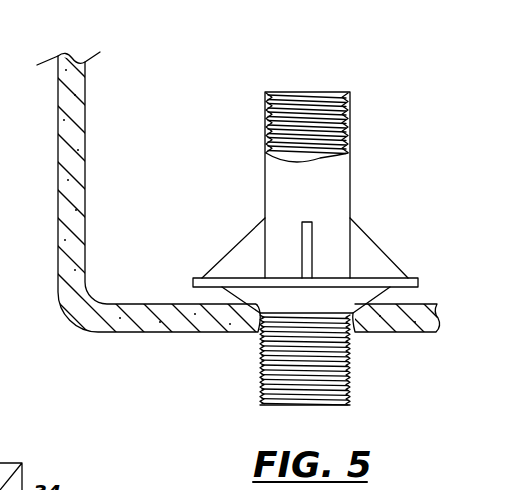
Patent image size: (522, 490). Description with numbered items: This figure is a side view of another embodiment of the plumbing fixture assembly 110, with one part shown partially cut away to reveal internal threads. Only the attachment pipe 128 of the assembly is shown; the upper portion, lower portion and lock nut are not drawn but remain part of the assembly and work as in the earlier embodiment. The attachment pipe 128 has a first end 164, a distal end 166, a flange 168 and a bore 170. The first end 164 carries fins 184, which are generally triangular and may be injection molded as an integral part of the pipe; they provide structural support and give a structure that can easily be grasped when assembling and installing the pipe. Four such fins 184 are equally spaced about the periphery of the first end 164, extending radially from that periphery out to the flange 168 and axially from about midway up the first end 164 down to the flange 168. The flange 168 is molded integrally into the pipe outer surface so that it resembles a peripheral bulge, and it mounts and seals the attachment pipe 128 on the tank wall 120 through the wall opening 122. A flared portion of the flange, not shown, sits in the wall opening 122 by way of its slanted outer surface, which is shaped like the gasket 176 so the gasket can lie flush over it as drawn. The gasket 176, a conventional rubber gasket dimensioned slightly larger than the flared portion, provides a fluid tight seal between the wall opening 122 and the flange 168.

The plumbing fixture assembly 110 is at (398, 65).
The tank wall 120 is at (127, 322).
The wall opening 122 is at (350, 355).
The attachment pipe 128 is at (352, 134).
The first end 164 is at (266, 115).
The distal end 166 is at (260, 374).
The flange 168 is at (412, 278).
The bore 170 is at (326, 99).
The gasket 176 is at (372, 298).
The fins 184 is at (245, 262).